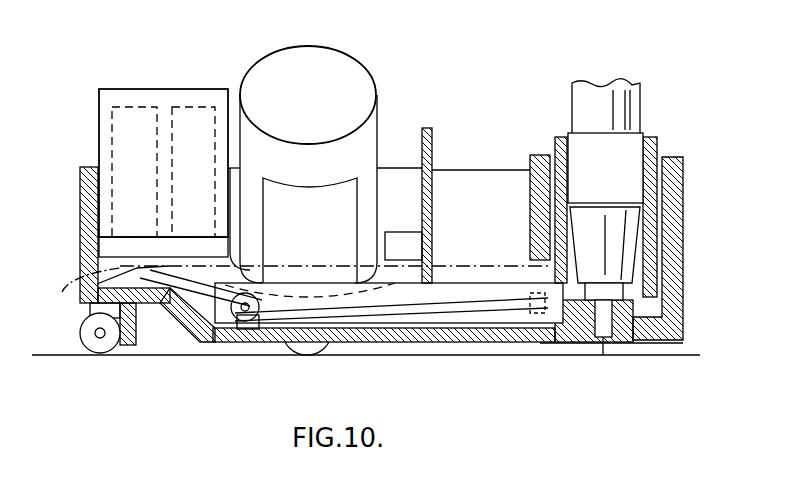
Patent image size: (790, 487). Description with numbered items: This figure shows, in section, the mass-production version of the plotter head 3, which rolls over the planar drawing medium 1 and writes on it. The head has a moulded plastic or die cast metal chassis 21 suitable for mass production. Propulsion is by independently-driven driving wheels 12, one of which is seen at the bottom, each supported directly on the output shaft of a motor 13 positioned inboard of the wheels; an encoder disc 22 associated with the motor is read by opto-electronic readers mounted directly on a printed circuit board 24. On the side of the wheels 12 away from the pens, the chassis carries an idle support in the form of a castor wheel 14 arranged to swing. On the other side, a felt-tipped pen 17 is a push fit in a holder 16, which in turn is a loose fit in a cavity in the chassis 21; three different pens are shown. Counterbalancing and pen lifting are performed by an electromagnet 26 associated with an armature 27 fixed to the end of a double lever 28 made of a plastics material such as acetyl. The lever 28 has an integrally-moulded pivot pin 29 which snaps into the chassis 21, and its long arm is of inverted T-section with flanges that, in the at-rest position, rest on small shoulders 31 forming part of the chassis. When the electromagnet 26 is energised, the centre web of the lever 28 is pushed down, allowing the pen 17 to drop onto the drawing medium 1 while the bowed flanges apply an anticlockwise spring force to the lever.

The drawing medium 1 is at (688, 355).
The plotter head 3 is at (683, 205).
The driving wheel 12 is at (325, 350).
The motor 13 is at (345, 70).
The castor wheel 14 is at (82, 333).
The holder 16 is at (650, 140).
The pen 17 is at (618, 155).
The chassis 21 is at (668, 276).
The encoder disc 22 is at (405, 231).
The printed circuit board 24 is at (432, 136).
The electromagnet 26 is at (132, 125).
The armature 27 is at (82, 287).
The double lever 28 is at (456, 292).
The pivot pin 29 is at (218, 340).
The shoulder 31 is at (512, 348).